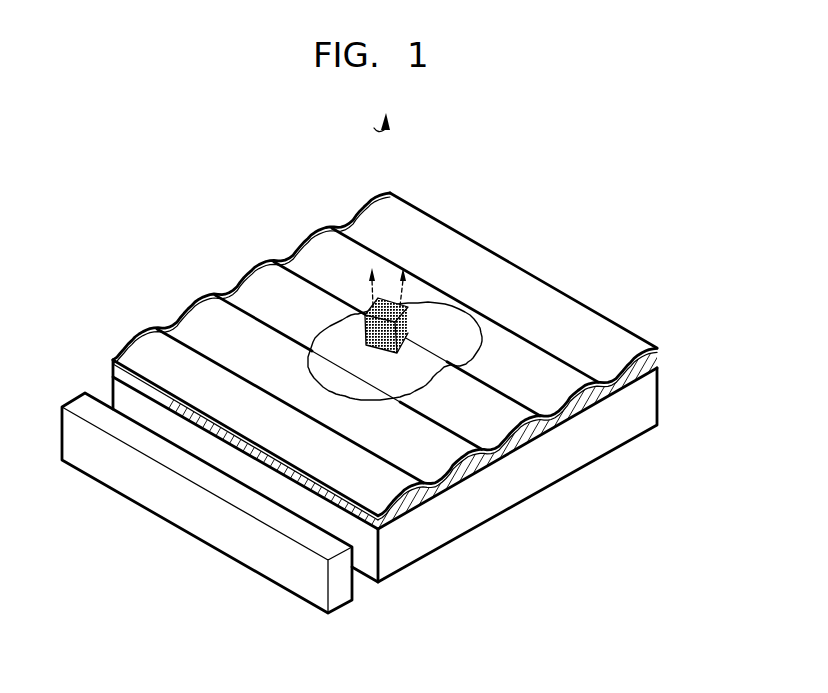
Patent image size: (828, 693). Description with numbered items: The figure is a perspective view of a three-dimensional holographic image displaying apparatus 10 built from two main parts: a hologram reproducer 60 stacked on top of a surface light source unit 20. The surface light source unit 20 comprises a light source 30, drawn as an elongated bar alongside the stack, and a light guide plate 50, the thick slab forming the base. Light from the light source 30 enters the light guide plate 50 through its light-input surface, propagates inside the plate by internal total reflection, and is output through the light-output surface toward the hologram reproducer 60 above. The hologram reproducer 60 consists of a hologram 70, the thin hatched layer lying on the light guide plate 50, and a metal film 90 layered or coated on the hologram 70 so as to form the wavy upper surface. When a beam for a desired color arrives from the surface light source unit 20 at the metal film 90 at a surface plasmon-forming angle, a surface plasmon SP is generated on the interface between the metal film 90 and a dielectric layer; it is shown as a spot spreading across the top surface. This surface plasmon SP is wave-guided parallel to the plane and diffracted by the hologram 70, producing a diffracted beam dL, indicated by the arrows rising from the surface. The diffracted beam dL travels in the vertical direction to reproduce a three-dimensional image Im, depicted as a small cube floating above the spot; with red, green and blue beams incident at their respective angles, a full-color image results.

The 3D holographic image displaying apparatus 10 is at (146, 232).
The surface light source unit 20 is at (450, 606).
The light source 30 is at (338, 602).
The light guide plate 50 is at (400, 563).
The hologram reproducer 60 is at (657, 273).
The hologram 70 is at (658, 350).
The metal film 90 is at (613, 338).
The surface plasmon SP is at (437, 333).
The 3D image Im is at (410, 306).
The diffracted beam dL is at (364, 294).